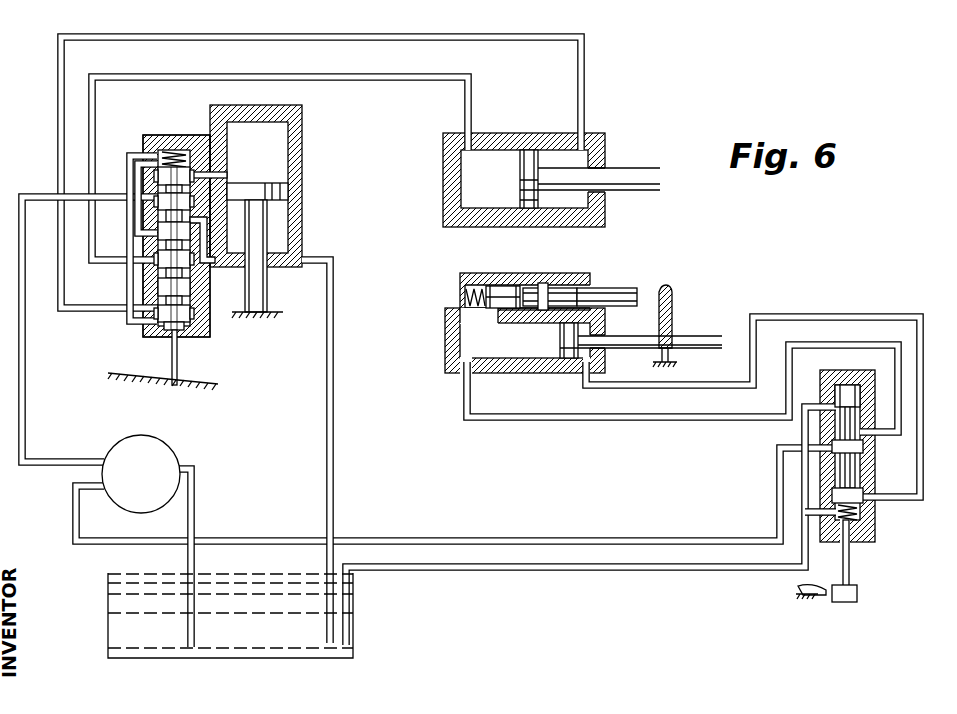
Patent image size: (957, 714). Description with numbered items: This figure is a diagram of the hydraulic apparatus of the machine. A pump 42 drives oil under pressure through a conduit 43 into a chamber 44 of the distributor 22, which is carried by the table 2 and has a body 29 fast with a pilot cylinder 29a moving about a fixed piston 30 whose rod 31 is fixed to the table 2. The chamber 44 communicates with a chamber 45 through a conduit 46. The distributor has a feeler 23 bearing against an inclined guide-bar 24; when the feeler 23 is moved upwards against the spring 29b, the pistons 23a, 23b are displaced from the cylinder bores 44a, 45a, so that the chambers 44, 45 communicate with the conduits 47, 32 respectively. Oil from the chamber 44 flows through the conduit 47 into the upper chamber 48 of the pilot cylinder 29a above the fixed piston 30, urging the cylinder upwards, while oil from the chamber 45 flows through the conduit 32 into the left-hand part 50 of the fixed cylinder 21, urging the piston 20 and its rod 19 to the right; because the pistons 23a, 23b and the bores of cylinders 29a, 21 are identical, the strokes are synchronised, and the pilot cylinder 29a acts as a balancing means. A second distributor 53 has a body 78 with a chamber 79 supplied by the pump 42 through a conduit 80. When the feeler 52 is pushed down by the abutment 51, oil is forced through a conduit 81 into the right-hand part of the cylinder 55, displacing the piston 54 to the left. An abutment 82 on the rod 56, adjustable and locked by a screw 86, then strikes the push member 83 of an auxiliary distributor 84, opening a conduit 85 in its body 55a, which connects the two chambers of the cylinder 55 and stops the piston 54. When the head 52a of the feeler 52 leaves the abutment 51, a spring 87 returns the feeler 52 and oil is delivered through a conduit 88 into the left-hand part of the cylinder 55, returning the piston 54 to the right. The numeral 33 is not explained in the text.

The table 2 is at (258, 320).
The rod 19 is at (636, 178).
The piston 20 is at (522, 186).
The fixed cylinder 21 is at (477, 224).
The distributor 22 is at (142, 136).
The feeler 23 is at (178, 358).
The piston 23a is at (287, 146).
The piston 23b is at (196, 302).
The inclined guide-bar 24 is at (132, 375).
The body 29 is at (163, 137).
The pilot cylinder 29a is at (303, 198).
The spring 29b is at (178, 156).
The fixed piston 30 is at (263, 188).
The rod 31 is at (267, 295).
The conduit 32 is at (90, 235).
The conduit 33 is at (84, 306).
The pump 42 is at (162, 462).
The conduit 43 is at (24, 358).
The chamber 44 is at (157, 207).
The cylinder bore 44a is at (157, 182).
The chamber 45 is at (157, 282).
The cylinder bore 45a is at (157, 264).
The conduit 46 is at (208, 280).
The conduit 47 is at (226, 175).
The upper chamber 48 is at (303, 137).
The left-hand part 50 is at (463, 180).
The abutment 51 is at (800, 590).
The feeler 52 is at (850, 578).
The head 52a is at (834, 606).
The distributor 53 is at (804, 398).
The piston 54 is at (560, 343).
The cylinder 55 is at (523, 374).
The body 55a is at (586, 278).
The rod 56 is at (712, 337).
The body 78 is at (876, 542).
The chamber 79 is at (868, 448).
The conduit 80 is at (580, 540).
The conduit 81 is at (650, 390).
The abutment 82 is at (672, 300).
The push member 83 is at (612, 288).
The auxiliary distributor 84 is at (543, 273).
The conduit 85 is at (505, 325).
The screw 86 is at (677, 365).
The spring 87 is at (876, 514).
The conduit 88 is at (532, 420).